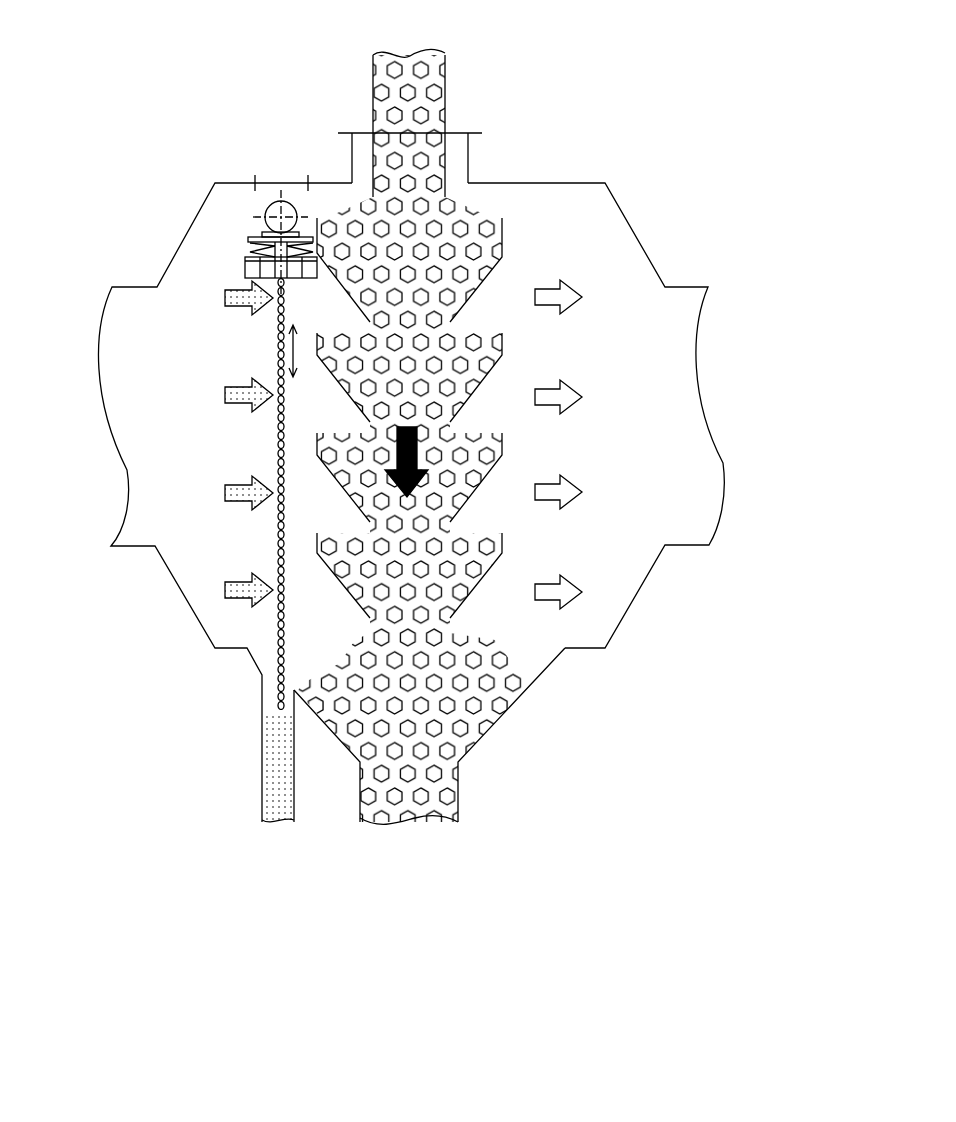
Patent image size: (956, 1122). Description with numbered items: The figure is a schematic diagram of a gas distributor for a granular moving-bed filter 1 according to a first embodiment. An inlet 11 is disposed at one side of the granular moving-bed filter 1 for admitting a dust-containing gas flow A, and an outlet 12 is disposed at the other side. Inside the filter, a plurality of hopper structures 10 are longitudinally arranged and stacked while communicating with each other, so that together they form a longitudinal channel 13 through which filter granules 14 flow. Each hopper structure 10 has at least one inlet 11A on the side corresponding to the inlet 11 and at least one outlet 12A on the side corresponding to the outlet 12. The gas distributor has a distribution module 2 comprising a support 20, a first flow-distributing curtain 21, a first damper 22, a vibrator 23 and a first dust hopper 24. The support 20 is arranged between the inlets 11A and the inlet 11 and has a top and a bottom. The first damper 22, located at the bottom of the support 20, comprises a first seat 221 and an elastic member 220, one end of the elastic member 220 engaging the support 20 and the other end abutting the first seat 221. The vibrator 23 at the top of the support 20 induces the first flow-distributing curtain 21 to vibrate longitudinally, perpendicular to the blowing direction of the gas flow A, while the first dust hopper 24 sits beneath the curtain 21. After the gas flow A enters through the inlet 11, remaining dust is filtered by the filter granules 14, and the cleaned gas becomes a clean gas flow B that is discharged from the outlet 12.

The granular moving-bed filter 1 is at (550, 100).
The distribution module 2 is at (210, 197).
The hopper structures 10 is at (505, 233).
The inlet 11 is at (112, 358).
The inlet of hopper structure 11A is at (351, 328).
The outlet 12 is at (667, 348).
The outlet of hopper structure 12A is at (455, 323).
The longitudinal channel 13 is at (367, 787).
The filter granules 14 is at (432, 777).
The support 20 is at (250, 240).
The first flow-distributing curtain 21 is at (281, 366).
The first damper 22 is at (117, 240).
The elastic member 220 is at (250, 250).
The first seat 221 is at (247, 267).
The vibrator 23 is at (267, 210).
The first dust hopper 24 is at (262, 707).
The dust-containing gas flow A is at (226, 395).
The clean gas flow B is at (543, 393).